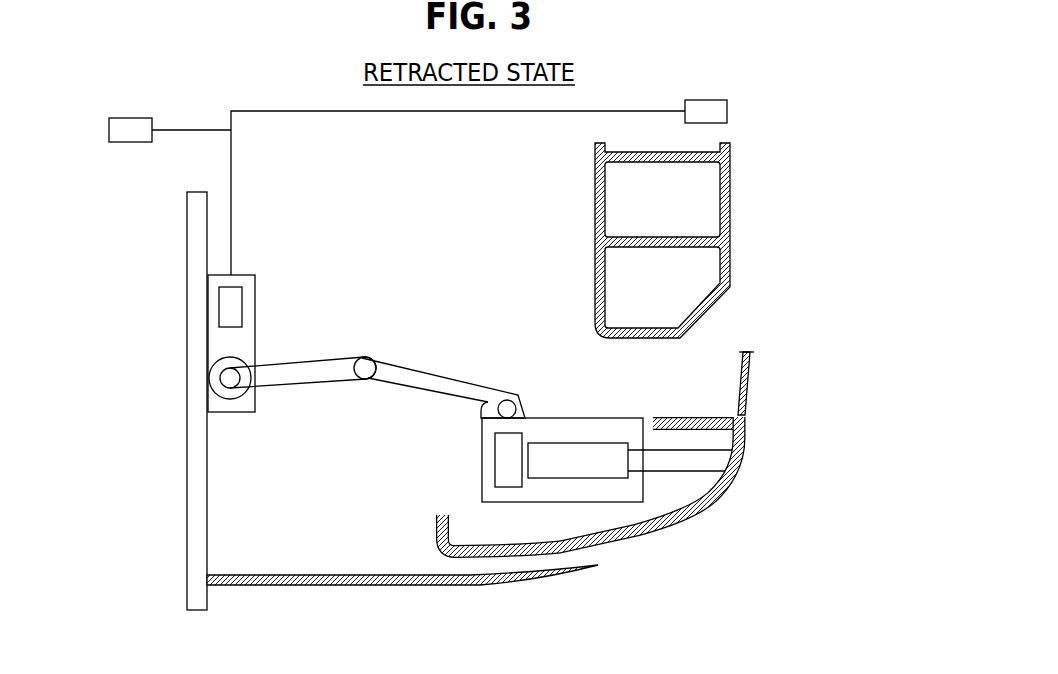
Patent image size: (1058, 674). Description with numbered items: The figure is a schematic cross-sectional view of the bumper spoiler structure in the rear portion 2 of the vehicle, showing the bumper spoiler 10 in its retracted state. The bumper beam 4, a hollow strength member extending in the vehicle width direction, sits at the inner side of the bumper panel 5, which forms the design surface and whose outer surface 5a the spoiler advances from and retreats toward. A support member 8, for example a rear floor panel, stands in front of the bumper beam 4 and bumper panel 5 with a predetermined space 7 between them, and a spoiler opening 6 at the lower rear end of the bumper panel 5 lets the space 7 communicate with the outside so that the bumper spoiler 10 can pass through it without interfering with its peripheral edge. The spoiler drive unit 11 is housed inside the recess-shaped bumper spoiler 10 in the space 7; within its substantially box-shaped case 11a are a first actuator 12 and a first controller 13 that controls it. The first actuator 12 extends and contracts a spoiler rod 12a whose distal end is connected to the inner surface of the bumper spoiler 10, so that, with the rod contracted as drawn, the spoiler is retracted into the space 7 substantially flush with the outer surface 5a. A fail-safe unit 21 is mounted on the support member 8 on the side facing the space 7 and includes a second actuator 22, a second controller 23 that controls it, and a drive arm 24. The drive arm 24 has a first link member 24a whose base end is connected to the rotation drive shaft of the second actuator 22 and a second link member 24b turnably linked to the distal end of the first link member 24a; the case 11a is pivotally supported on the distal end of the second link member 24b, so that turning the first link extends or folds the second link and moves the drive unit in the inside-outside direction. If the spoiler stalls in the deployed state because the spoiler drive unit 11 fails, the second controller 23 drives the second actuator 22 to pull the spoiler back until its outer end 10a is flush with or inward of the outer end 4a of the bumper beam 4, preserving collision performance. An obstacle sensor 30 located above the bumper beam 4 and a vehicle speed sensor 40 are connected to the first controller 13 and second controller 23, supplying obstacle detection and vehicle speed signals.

The rear portion 2 is at (119, 386).
The bumper beam 4 is at (696, 239).
The outer end 4a is at (731, 226).
The bumper panel 5 is at (376, 588).
The outer surface 5a is at (750, 373).
The spoiler opening 6 is at (737, 416).
The space 7 is at (522, 311).
The support member 8 is at (185, 207).
The bumper spoiler 10 is at (635, 484).
The outer end 10a is at (746, 420).
The spoiler drive unit 11 is at (600, 522).
The case 11a is at (595, 417).
The first actuator 12 is at (582, 470).
The spoiler rod 12a is at (685, 465).
The first controller 13 is at (507, 475).
The fail-safe unit 21 is at (366, 286).
The second actuator 22 is at (230, 357).
The second controller 23 is at (231, 300).
The drive arm 24 is at (377, 305).
The first link member 24a is at (311, 373).
The second link member 24b is at (425, 385).
The obstacle sensor 30 is at (729, 112).
The vehicle speed sensor 40 is at (107, 130).